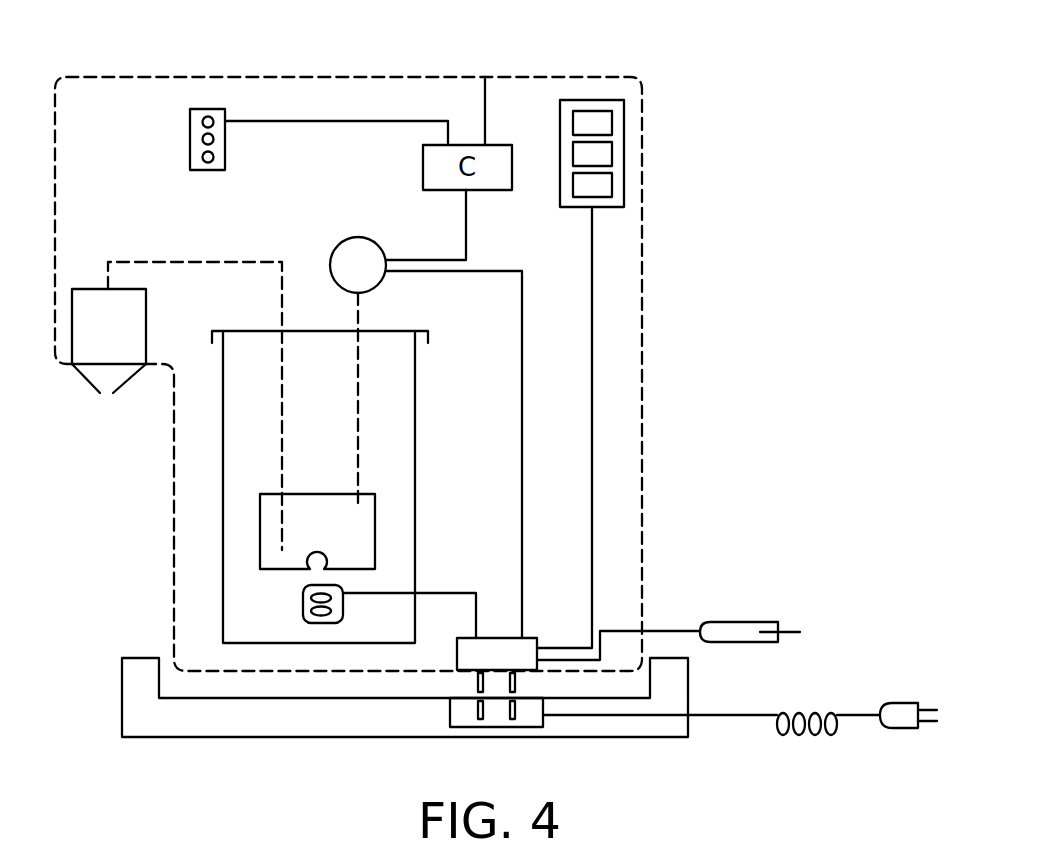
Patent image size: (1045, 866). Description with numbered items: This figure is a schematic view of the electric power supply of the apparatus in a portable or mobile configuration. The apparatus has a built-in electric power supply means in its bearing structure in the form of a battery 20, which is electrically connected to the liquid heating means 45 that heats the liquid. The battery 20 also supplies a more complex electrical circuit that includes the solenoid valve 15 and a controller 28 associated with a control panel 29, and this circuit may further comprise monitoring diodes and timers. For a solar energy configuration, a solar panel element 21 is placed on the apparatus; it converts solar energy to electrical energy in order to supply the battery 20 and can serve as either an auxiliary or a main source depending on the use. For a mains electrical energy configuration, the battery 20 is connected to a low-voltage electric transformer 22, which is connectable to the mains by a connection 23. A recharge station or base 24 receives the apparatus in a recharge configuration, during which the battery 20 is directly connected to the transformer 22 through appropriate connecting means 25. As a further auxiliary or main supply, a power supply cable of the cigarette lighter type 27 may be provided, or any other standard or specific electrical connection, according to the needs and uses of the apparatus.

The solenoid valve 15 is at (358, 237).
The battery 20 is at (452, 673).
The solar panel element 21 is at (624, 112).
The low-voltage electric transformer 22 is at (520, 727).
The connection 23 is at (900, 703).
The recharge station or base 24 is at (148, 742).
The connecting means 25 is at (538, 694).
The power supply cable of the cigarette lighter type 27 is at (750, 622).
The controller 28 is at (486, 77).
The control panel 29 is at (207, 109).
The liquid heating means 45 is at (293, 606).